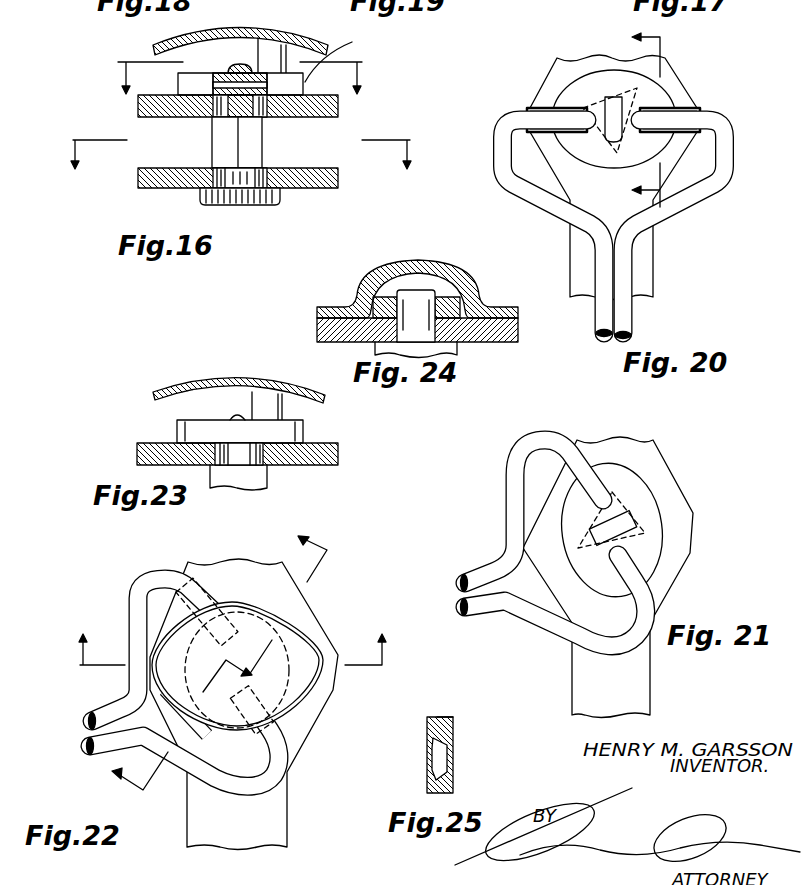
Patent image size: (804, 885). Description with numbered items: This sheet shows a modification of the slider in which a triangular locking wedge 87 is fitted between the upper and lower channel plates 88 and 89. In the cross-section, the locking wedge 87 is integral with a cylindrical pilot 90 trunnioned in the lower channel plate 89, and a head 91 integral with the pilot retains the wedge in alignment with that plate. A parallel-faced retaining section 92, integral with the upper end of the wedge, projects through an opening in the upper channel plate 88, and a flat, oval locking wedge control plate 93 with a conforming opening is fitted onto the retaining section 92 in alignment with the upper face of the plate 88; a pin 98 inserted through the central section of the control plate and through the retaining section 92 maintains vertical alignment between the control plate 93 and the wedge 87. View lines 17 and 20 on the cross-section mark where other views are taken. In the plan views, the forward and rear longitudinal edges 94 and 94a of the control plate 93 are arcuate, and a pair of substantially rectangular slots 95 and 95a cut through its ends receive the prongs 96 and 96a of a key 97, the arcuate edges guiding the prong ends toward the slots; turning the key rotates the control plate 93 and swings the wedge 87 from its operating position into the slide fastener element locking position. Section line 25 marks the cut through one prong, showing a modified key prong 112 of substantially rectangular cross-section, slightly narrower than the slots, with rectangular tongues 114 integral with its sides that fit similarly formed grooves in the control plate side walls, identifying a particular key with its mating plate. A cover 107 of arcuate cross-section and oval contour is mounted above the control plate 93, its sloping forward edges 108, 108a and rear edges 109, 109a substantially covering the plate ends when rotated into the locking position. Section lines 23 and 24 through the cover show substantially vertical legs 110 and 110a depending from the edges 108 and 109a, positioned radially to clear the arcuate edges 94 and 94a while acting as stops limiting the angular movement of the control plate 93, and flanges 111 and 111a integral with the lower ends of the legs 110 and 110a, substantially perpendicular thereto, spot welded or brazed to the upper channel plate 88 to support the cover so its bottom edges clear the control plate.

In FIG. 16, the section line 17 is at (239, 168).
In FIG. 16, the view line 20 is at (243, 89).
In FIG. 22, the section line 23 is at (231, 653).
In FIG. 22, the section line 24 is at (210, 653).
In FIG. 20, the section line 25 is at (632, 119).
In FIG. 16, the triangular locking wedge 87 is at (212, 145).
In FIG. 16, the upper channel plate 88 is at (318, 118).
In FIG. 23, the upper channel plate 88 is at (338, 452).
In FIG. 16, the lower channel plate 89 is at (317, 188).
In FIG. 16, the cylindrical pilot 90 is at (265, 167).
In FIG. 16, the head 91 is at (200, 197).
In FIG. 16, the retaining section 92 is at (246, 66).
In FIG. 24, the retaining section 92 is at (416, 324).
In FIG. 20, the retaining section 92 is at (612, 134).
In FIG. 21, the retaining section 92 is at (630, 518).
In FIG. 16, the locking wedge control plate 93 is at (337, 52).
In FIG. 23, the locking wedge control plate 93 is at (177, 428).
In FIG. 20, the locking wedge control plate 93 is at (578, 85).
In FIG. 21, the locking wedge control plate 93 is at (603, 578).
In FIG. 22, the locking wedge control plate 93 is at (244, 704).
In FIG. 25, the locking wedge control plate 93 is at (437, 717).
In FIG. 20, the forward longitudinal edge 94 is at (585, 133).
In FIG. 21, the forward longitudinal edge 94 is at (555, 512).
In FIG. 20, the rear longitudinal edge 94a is at (592, 75).
In FIG. 21, the rear longitudinal edge 94a is at (647, 488).
In FIG. 20, the slot 95 is at (573, 130).
In FIG. 21, the slot 95 is at (608, 480).
In FIG. 20, the slot 95a is at (655, 133).
In FIG. 21, the slot 95a is at (640, 553).
In FIG. 20, the prong 96 is at (545, 107).
In FIG. 21, the prong 96 is at (597, 457).
In FIG. 20, the prong 96a is at (682, 107).
In FIG. 21, the prong 96a is at (652, 587).
In FIG. 20, the key 97 is at (635, 313).
In FIG. 21, the key 97 is at (485, 614).
In FIG. 16, the pin 98 is at (213, 84).
In FIG. 16, the cover 107 is at (248, 28).
In FIG. 23, the cover 107 is at (205, 378).
In FIG. 22, the cover 107 is at (310, 663).
In FIG. 22, the sloping forward edge 108 is at (207, 733).
In FIG. 22, the sloping forward edge 108a is at (296, 708).
In FIG. 22, the sloping rear edge 109 is at (172, 627).
In FIG. 22, the sloping rear edge 109a is at (303, 618).
In FIG. 24, the leg 110 is at (355, 293).
In FIG. 22, the leg 110 is at (145, 693).
In FIG. 24, the leg 110a is at (483, 293).
In FIG. 23, the leg 110a is at (283, 403).
In FIG. 22, the leg 110a is at (262, 601).
In FIG. 24, the flange 111 is at (317, 314).
In FIG. 22, the flange 111 is at (170, 720).
In FIG. 24, the flange 111a is at (518, 316).
In FIG. 22, the flange 111a is at (305, 603).
In FIG. 25, the key prong 112 is at (453, 753).
In FIG. 25, the tongue 114 is at (435, 738).